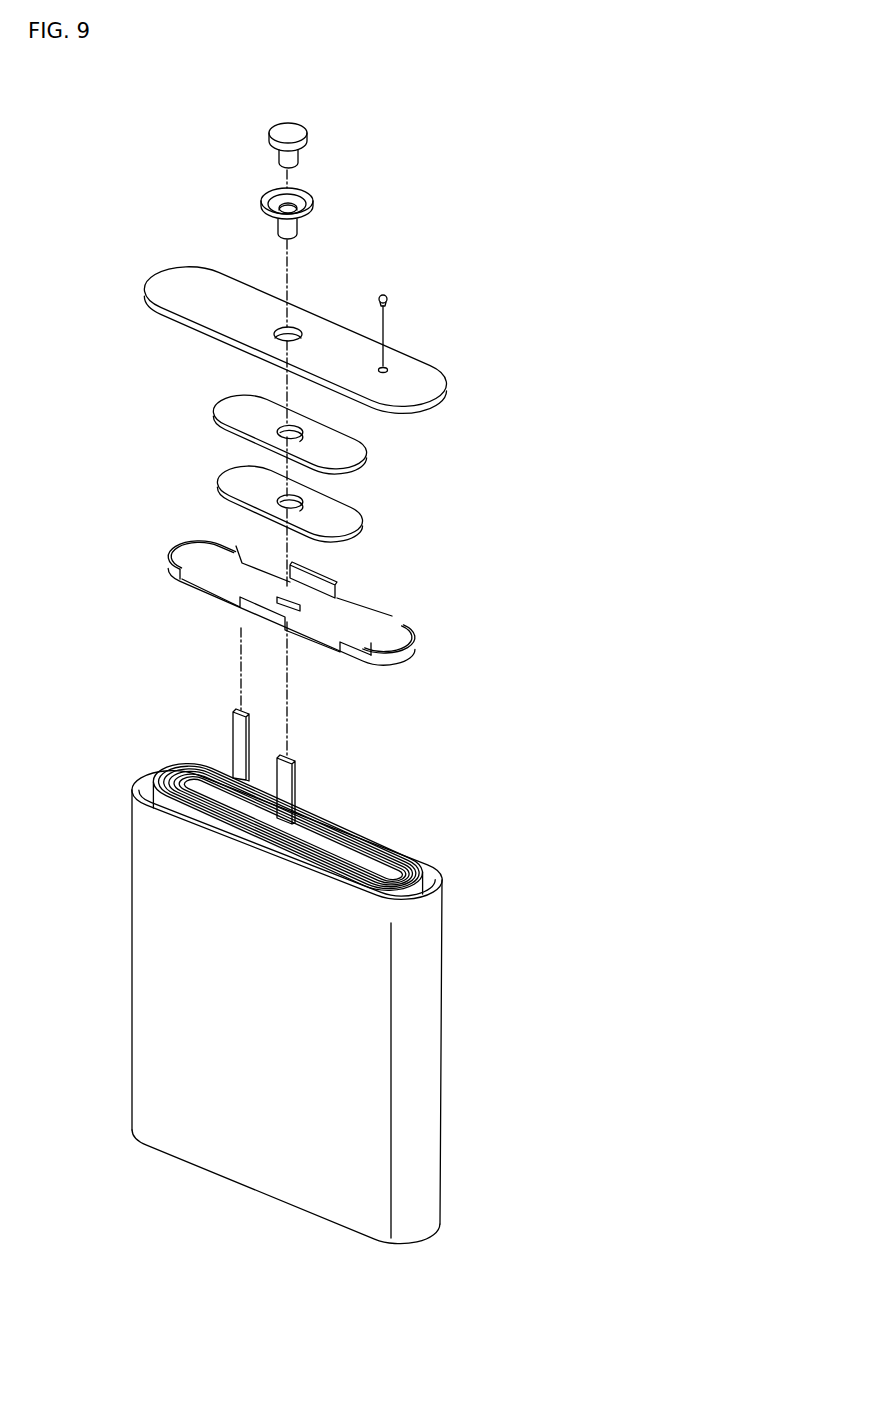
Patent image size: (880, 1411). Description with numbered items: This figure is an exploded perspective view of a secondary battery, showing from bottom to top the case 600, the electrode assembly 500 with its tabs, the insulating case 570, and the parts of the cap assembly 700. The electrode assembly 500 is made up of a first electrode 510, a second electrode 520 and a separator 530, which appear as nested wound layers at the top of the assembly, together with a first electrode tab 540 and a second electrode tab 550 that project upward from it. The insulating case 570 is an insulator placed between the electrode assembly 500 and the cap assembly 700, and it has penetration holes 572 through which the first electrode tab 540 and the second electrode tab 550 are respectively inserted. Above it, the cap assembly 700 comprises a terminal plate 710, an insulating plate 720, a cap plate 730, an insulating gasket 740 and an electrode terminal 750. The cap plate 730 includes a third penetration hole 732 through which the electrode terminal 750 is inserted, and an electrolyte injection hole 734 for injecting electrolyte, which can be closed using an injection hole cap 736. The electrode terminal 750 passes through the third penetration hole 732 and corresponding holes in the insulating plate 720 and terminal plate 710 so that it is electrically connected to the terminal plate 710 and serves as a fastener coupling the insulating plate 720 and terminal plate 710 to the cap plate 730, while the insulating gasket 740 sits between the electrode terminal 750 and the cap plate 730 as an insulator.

The electrode assembly 500 is at (386, 836).
The first electrode 510 is at (153, 773).
The second electrode 520 is at (188, 767).
The separator 530 is at (165, 763).
The first electrode tab 540 is at (288, 779).
The second electrode tab 550 is at (237, 730).
The insulating case 570 is at (414, 654).
The penetration holes 572 is at (233, 540).
The case 600 is at (150, 965).
The cap assembly 700 is at (152, 255).
The terminal plate 710 is at (364, 530).
The insulating plate 720 is at (366, 468).
The cap plate 730 is at (444, 400).
The third penetration hole 732 is at (298, 331).
The electrolyte injection hole 734 is at (386, 368).
The injection hole cap 736 is at (389, 297).
The insulating gasket 740 is at (312, 206).
The electrode terminal 750 is at (298, 132).